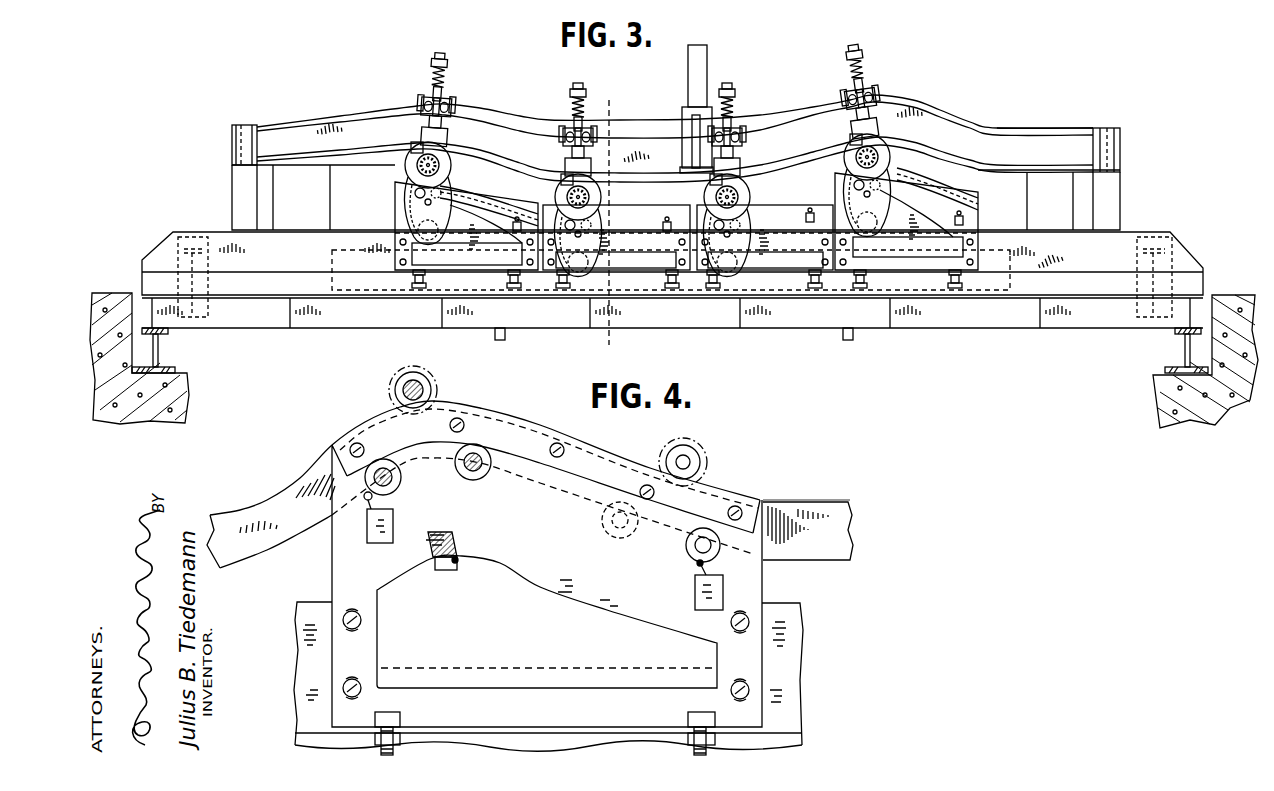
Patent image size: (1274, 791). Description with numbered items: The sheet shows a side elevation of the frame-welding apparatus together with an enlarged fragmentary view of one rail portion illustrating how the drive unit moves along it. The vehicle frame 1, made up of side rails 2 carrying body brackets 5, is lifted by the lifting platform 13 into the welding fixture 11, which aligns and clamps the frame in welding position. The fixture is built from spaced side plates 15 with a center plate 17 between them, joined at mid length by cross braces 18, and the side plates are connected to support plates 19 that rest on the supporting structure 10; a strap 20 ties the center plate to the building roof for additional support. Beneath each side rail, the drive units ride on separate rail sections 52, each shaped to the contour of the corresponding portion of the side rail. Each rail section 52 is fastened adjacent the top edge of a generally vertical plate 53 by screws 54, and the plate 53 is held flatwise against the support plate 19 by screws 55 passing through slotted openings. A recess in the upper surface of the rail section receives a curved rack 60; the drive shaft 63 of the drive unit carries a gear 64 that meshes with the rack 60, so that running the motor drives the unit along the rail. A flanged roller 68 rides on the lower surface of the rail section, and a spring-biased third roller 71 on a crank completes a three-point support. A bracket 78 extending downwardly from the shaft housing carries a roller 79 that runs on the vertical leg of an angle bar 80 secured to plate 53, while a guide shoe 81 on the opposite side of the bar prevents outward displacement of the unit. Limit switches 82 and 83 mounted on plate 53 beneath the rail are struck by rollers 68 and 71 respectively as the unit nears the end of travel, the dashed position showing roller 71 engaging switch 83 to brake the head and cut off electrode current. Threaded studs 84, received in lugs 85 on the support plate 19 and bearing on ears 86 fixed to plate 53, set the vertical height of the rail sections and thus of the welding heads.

In FIG. 4, the vehicle frame 1 is at (823, 501).
In FIG. 4, the side rails 2 is at (850, 527).
In FIG. 3, the body brackets 5 is at (622, 100).
In FIG. 3, the supporting structure 10 is at (160, 349).
In FIG. 3, the welding fixture 11 is at (964, 116).
In FIG. 3, the lifting platform 13 is at (330, 256).
In FIG. 3, the side plates 15 is at (1005, 165).
In FIG. 3, the center plate 17 is at (1003, 127).
In FIG. 3, the cross braces 18 is at (690, 128).
In FIG. 3, the support plates 19 is at (1121, 243).
In FIG. 4, the support plates 19 is at (803, 666).
In FIG. 3, the strap 20 is at (707, 63).
In FIG. 3, the rail sections 52 is at (492, 200).
In FIG. 4, the rail sections 52 is at (706, 500).
In FIG. 4, the vertical plate 53 is at (765, 592).
In FIG. 4, the screws 54 is at (356, 442).
In FIG. 4, the screws 55 is at (352, 607).
In FIG. 4, the curved rack 60 is at (502, 409).
In FIG. 4, the drive shaft 63 is at (400, 383).
In FIG. 4, the gear 64 is at (437, 381).
In FIG. 4, the roller 68 is at (398, 482).
In FIG. 4, the third roller 71 is at (477, 478).
In FIG. 4, the bracket 78 is at (457, 541).
In FIG. 4, the roller 79 is at (440, 570).
In FIG. 4, the angle bar 80 is at (541, 588).
In FIG. 4, the guide shoe 81 is at (462, 563).
In FIG. 4, the limit switch 82 is at (367, 533).
In FIG. 4, the limit switch 83 is at (695, 592).
In FIG. 4, the threaded studs 84 is at (376, 730).
In FIG. 4, the lugs 85 is at (381, 746).
In FIG. 4, the ears 86 is at (400, 720).